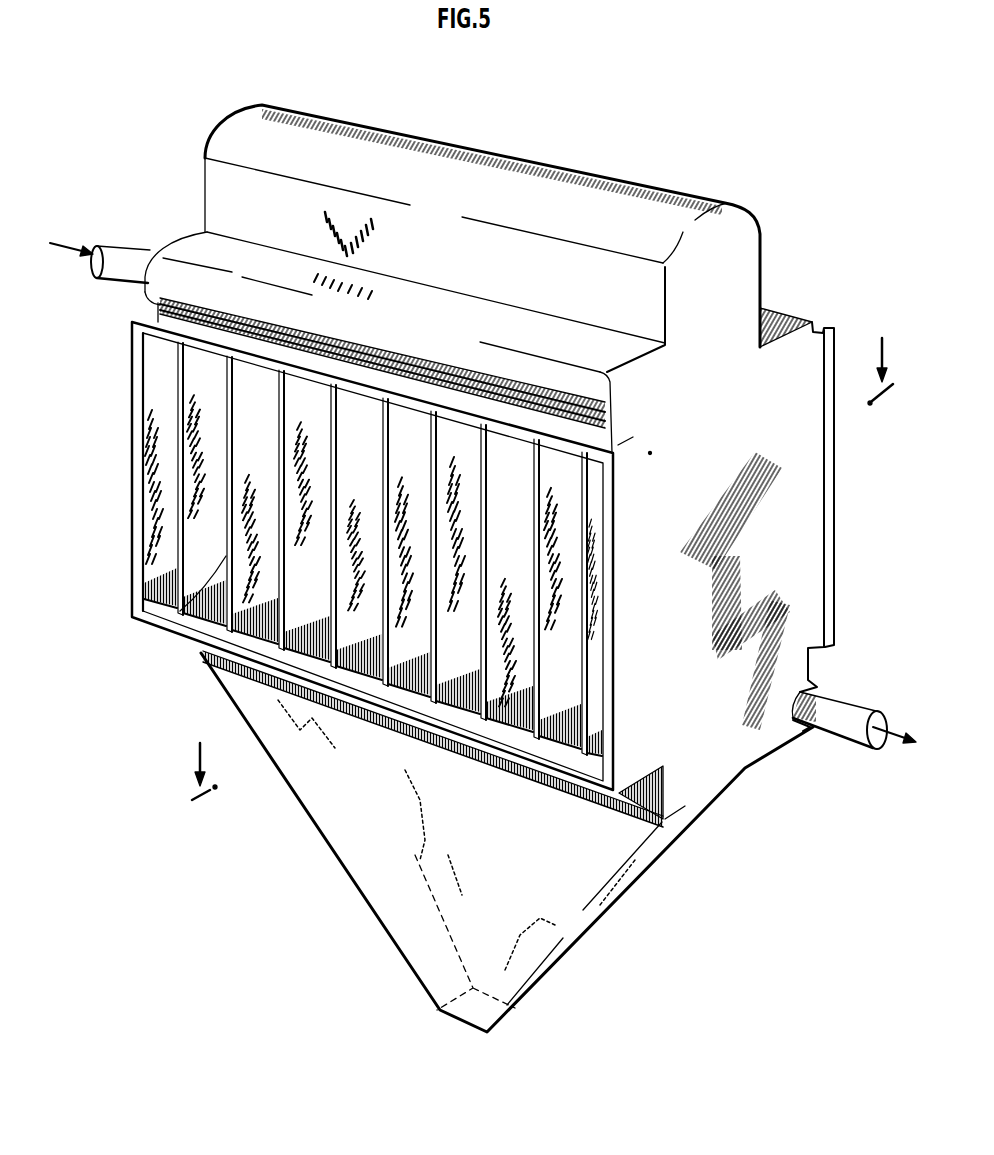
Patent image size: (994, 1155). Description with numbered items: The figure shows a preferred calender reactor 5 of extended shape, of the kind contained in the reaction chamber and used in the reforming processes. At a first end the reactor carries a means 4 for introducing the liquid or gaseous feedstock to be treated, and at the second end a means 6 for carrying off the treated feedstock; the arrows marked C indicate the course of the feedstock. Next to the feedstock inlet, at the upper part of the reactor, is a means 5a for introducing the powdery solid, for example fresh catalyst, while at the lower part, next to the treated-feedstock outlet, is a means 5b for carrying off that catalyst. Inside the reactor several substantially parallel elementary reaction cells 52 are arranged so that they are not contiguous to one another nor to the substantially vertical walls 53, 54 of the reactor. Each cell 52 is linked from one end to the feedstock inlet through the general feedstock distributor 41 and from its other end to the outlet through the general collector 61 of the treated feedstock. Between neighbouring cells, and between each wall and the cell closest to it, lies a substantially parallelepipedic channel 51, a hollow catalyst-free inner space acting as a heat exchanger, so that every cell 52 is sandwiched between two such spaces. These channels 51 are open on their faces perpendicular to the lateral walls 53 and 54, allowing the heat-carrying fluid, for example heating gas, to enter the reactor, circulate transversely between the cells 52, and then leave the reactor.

The calender reactor 5 is at (768, 167).
The means for introducing the powdery solid 5a is at (568, 183).
The means for carrying off the powdery solid 5b is at (410, 950).
The means for introducing a feedstock 4 is at (125, 283).
The general feedstock distributor 41 is at (203, 247).
The channel 51 is at (263, 637).
The elementary reaction cell 52 is at (170, 612).
The wall of the reactor 53 is at (792, 460).
The wall of the reactor 54 is at (155, 368).
The means for carrying off the treated feedstock 6 is at (837, 740).
The general collector of the treated feedstock 61 is at (790, 730).